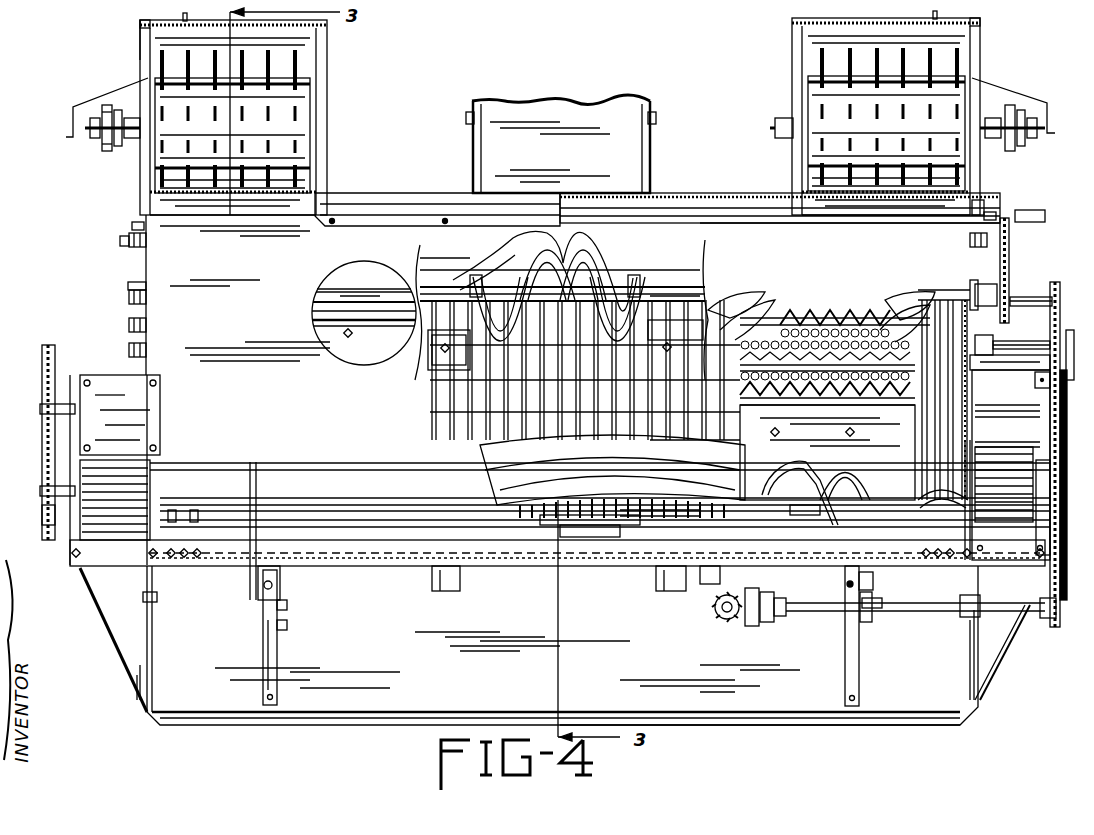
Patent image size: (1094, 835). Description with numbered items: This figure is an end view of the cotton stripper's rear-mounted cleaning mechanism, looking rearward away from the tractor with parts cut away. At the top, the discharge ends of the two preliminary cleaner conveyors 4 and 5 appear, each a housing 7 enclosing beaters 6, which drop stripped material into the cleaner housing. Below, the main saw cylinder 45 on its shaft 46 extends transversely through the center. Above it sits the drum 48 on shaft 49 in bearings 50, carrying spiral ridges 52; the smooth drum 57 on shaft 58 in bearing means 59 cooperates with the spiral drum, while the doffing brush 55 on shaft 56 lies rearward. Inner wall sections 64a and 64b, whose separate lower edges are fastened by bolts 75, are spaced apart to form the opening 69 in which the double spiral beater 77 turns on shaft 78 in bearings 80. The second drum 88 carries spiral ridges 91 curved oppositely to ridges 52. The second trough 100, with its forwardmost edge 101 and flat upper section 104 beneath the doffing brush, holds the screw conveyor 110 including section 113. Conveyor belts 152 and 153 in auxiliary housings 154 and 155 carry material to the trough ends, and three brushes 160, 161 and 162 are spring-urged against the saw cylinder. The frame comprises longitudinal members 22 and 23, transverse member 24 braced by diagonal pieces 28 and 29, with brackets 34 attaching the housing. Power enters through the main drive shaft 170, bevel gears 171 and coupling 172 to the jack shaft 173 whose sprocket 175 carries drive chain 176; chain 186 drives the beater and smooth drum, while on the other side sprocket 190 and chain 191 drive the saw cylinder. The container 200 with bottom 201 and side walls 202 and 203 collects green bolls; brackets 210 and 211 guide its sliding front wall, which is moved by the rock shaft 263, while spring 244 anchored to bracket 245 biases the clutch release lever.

The preliminary cleaner conveyor 4 is at (982, 58).
The preliminary cleaner conveyor 5 is at (330, 72).
The beaters 6 is at (302, 120).
The housing 7 is at (148, 54).
The longitudinal angle iron member 22 is at (262, 604).
The longitudinal angle iron member 23 is at (870, 606).
The transverse angle iron member 24 is at (42, 409).
The diagonal frame piece 28 is at (250, 465).
The diagonal frame piece 29 is at (875, 592).
The brackets 34 is at (146, 241).
The main saw cylinder 45 is at (446, 400).
The shaft 46 is at (1011, 465).
The drum 48 is at (727, 292).
The shaft 49 is at (129, 300).
The bearings 50 is at (129, 325).
The spiral ridges 52 is at (760, 300).
The doffing drum or brush 55 is at (806, 312).
The shaft 56 is at (129, 349).
The smooth drum 57 is at (976, 208).
The shaft 58 is at (120, 241).
The bearing means 59 is at (132, 226).
The wall section 64a is at (378, 310).
The wall section 64b is at (703, 313).
The opening 69 is at (506, 272).
The bolts 75 is at (349, 336).
The double spiral beater 77 is at (549, 265).
The shaft 78 is at (347, 292).
The bearings 80 is at (128, 288).
The second drum 88 is at (530, 576).
The spiral ridges 91 is at (480, 459).
The second trough or concave wall 100 is at (760, 560).
The forwardmost edge 101 is at (816, 512).
The horizontal section 104 is at (880, 418).
The screw conveyor 110 is at (712, 522).
The screw conveyor section 113 is at (806, 480).
The conveyor belt 152 is at (120, 480).
The conveyor belt 153 is at (1004, 462).
The auxiliary housing 154 is at (95, 390).
The auxiliary housing 155 is at (1012, 420).
The brush 160 is at (672, 512).
The brush 161 is at (635, 520).
The brush 162 is at (585, 510).
The main drive shaft 170 is at (720, 616).
The bevel gears 171 is at (746, 622).
The coupling 172 is at (766, 624).
The transverse jack shaft 173 is at (798, 611).
The sprocket 175 is at (1046, 613).
The drive chain 176 is at (1068, 300).
The chain 186 is at (1012, 252).
The sprocket 190 is at (42, 518).
The chain 191 is at (44, 490).
The hopper or container 200 is at (357, 724).
The stationary bottom 201 is at (773, 727).
The stationary side wall 202 is at (150, 646).
The stationary side wall 203 is at (985, 652).
The bracket 210 is at (257, 583).
The bracket 211 is at (874, 581).
The spring 244 is at (1035, 398).
The bracket 245 is at (1070, 348).
The rock shaft 263 is at (415, 553).